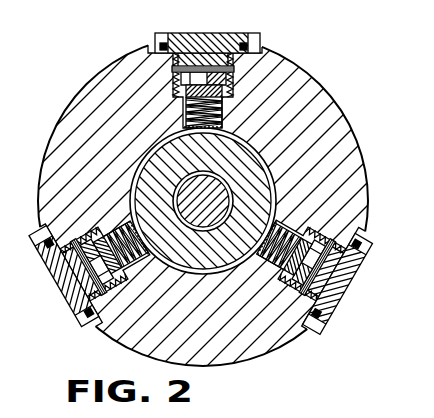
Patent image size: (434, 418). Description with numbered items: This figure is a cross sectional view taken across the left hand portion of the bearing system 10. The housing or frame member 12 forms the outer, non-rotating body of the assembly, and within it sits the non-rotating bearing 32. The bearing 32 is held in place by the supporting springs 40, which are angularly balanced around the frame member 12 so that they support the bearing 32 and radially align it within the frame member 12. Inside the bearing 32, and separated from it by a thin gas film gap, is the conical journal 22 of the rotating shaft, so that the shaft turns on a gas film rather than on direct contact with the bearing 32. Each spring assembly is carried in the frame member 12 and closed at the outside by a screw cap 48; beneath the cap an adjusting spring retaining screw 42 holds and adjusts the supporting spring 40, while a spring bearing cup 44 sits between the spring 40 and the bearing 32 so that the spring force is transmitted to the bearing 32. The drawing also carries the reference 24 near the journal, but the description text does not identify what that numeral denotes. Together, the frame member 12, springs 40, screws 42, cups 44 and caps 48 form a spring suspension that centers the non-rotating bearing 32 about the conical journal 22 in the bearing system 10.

The bearing system 10 is at (217, 209).
The housing or frame member 12 is at (104, 68).
The conical journal 22 is at (215, 209).
The bore wall 24 is at (233, 193).
The non-rotating bearing 32 is at (245, 166).
The supporting springs 40 is at (174, 117).
The adjusting spring retaining screws 42 is at (240, 70).
The spring bearing cups 44 is at (226, 126).
The screw caps 48 is at (199, 33).